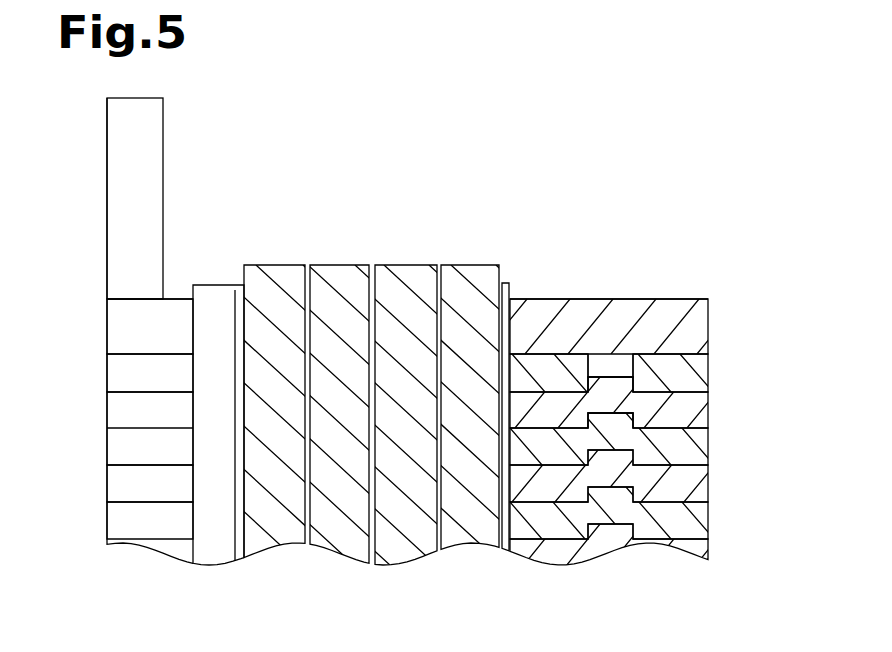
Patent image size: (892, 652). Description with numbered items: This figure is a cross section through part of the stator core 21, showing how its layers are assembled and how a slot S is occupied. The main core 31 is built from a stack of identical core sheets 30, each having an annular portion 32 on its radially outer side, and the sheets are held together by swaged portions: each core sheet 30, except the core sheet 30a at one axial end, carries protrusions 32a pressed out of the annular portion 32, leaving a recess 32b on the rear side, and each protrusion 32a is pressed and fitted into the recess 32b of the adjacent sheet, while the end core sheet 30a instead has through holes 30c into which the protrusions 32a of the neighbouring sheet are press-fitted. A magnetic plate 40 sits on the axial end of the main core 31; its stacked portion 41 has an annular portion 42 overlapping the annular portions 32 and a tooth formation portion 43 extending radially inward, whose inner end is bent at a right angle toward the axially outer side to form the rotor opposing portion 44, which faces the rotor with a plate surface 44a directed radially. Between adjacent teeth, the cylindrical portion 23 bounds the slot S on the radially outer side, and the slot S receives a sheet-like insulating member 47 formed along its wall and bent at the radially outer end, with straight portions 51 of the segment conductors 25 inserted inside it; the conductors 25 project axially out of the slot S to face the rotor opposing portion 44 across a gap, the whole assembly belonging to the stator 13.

The stack structure 13 is at (725, 175).
The stator core 21 is at (717, 483).
The cylindrical portion 23 is at (710, 518).
The segment conductor 25 is at (444, 387).
The core sheet 30 is at (122, 444).
The core sheet located at one axial end 30a is at (117, 369).
The through hole 30c is at (624, 362).
The main core 31 is at (108, 515).
The annular portion 32 is at (702, 402).
The protrusion 32a is at (598, 372).
The recess 32b is at (630, 442).
The magnetic plate 40 is at (104, 288).
The stacked portion 41 is at (710, 323).
The annular portion 42 is at (684, 300).
The tooth formation portion 43 is at (170, 331).
The rotor opposing portion 44 is at (165, 151).
The inner surface of wall portion 44a is at (110, 171).
The insulating member 47 is at (219, 283).
The straight portion 51 is at (332, 272).
The slot S is at (506, 290).